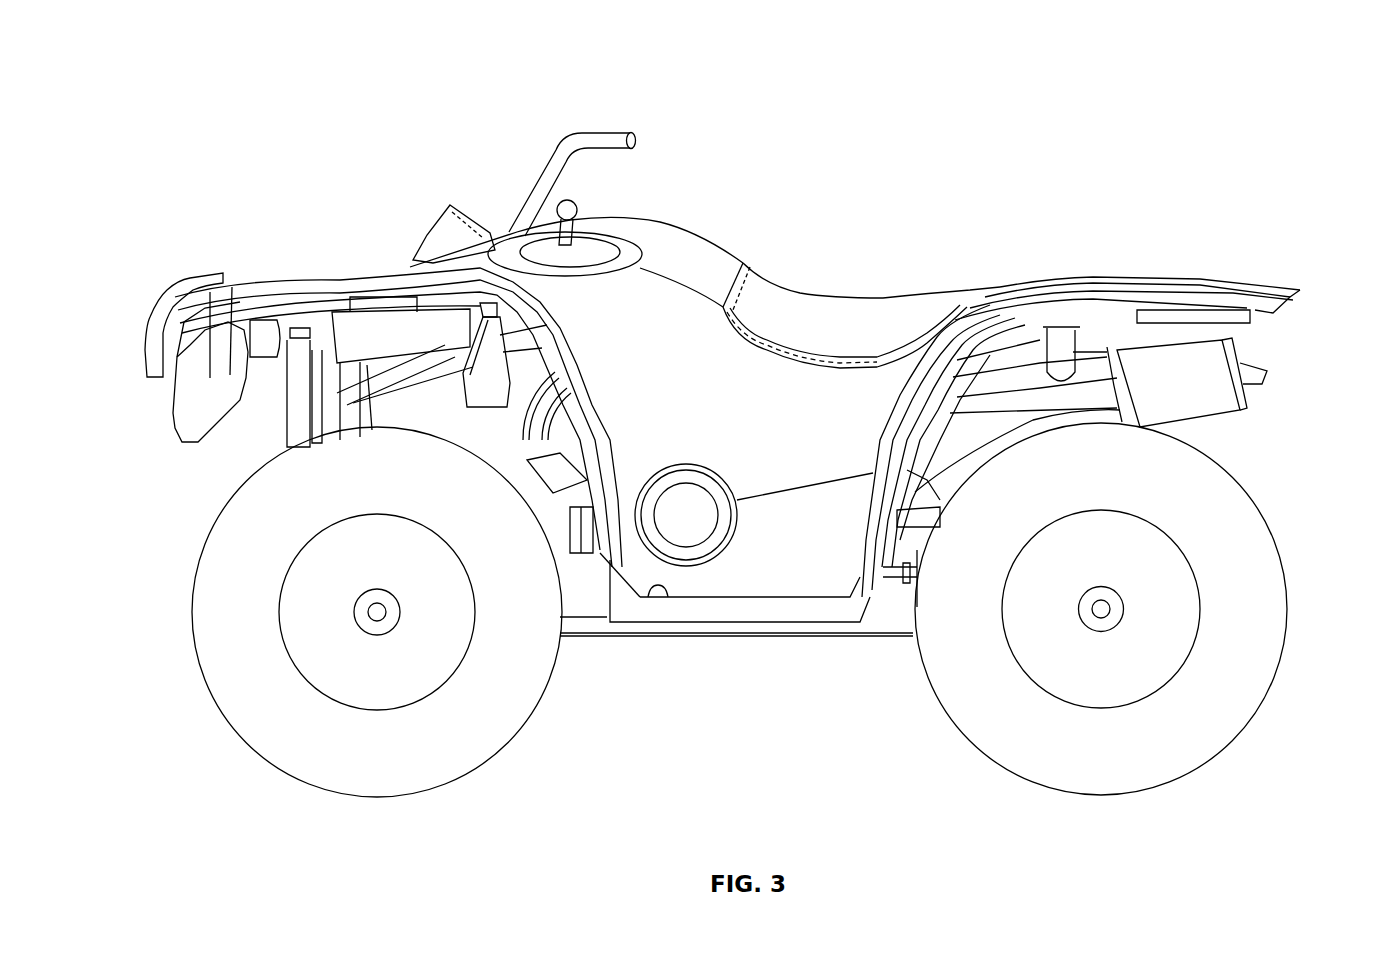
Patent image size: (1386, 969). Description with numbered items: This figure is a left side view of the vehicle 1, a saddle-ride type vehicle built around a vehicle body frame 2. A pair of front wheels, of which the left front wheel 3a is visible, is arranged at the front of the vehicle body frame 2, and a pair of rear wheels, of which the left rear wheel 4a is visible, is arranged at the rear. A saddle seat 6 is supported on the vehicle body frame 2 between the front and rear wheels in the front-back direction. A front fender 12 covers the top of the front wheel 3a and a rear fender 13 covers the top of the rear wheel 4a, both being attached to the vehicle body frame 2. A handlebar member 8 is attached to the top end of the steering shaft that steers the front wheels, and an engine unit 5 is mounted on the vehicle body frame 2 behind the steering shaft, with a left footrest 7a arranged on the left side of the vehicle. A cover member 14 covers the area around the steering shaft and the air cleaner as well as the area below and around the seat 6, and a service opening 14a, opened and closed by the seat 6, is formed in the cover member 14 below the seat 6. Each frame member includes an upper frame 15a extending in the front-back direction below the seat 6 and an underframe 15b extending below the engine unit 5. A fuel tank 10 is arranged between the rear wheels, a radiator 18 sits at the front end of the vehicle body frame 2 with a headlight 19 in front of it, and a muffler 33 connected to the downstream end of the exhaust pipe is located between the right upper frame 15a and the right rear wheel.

The vehicle 1 is at (337, 148).
The vehicle body frame 2 is at (812, 640).
The left front wheel 3a is at (190, 566).
The left rear wheel 4a is at (1272, 512).
The engine unit 5 is at (522, 452).
The seat 6 is at (938, 288).
The left footrest 7a is at (657, 600).
The handlebar member 8 is at (612, 128).
The fuel tank 10 is at (1096, 338).
The front fender 12 is at (330, 278).
The rear fender 13 is at (1140, 280).
The cover member 14 is at (712, 236).
The service opening 14a is at (765, 270).
The upper frame 15a is at (418, 348).
The underframe 15b is at (865, 640).
The radiator 18 is at (278, 395).
The headlight 19 is at (178, 292).
The muffler 33 is at (1222, 417).